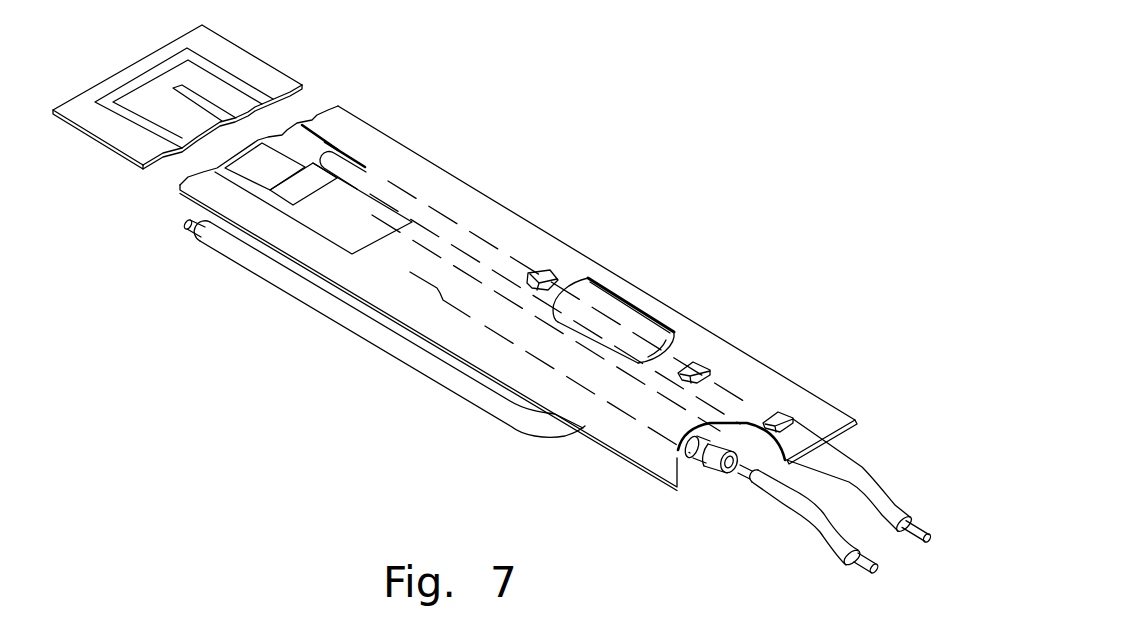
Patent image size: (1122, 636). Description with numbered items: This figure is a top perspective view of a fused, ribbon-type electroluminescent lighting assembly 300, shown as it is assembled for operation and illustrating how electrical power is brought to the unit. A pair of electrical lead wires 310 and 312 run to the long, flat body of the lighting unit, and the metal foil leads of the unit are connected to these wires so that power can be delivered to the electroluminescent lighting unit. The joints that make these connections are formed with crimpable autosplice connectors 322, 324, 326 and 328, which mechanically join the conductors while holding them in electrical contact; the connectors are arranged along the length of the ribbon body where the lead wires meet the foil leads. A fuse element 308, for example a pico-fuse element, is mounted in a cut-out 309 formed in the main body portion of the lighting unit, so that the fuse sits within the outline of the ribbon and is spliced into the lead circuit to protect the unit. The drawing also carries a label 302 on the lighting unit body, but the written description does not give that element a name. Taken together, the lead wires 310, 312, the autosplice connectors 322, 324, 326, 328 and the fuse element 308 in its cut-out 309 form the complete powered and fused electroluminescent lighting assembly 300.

The ribbon-type electroluminescent lighting assembly 300 is at (531, 138).
The flexible circuit substrate 302 is at (432, 163).
The fuse element 308 is at (630, 338).
The cut-out 309 is at (623, 308).
The electrical lead wire 310 is at (370, 325).
The electrical lead wire 312 is at (887, 503).
The autosplice connector 322 is at (712, 462).
The autosplice connector 324 is at (783, 413).
The autosplice connector 326 is at (703, 365).
The autosplice connector 328 is at (548, 275).